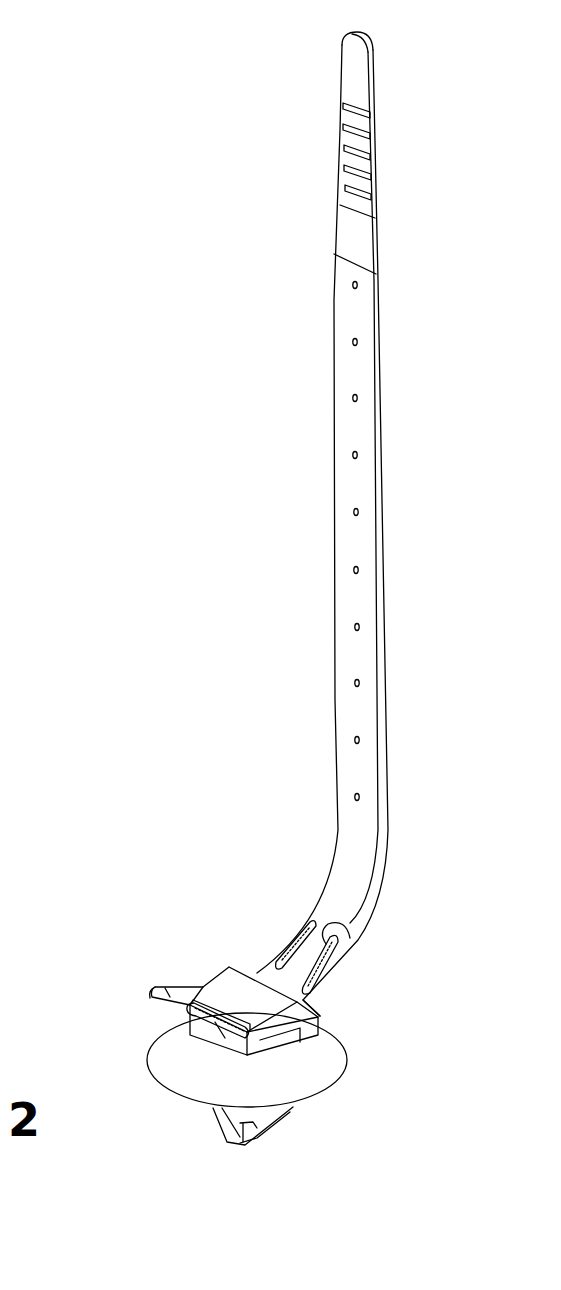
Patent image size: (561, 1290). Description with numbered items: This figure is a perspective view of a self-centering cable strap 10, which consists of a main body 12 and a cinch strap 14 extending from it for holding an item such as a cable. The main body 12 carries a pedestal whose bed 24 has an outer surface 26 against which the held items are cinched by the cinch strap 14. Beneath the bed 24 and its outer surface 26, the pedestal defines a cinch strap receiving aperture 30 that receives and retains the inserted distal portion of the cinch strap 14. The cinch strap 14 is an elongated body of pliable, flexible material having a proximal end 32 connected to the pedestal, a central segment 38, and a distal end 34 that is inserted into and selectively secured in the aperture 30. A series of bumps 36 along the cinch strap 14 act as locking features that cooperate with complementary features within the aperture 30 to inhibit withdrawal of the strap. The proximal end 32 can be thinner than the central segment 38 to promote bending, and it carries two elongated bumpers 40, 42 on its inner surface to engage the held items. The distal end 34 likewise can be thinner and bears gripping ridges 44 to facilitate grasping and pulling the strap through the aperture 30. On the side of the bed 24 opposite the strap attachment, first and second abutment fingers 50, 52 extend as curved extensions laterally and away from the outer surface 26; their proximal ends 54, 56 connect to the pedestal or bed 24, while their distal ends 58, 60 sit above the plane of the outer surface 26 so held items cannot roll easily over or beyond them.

The self-centering cable strap 10 is at (258, 290).
The main body 12 is at (136, 970).
The cinch strap 14 is at (418, 801).
The bed 24 is at (187, 1028).
The outer surface 26 is at (246, 1010).
The cinch strap receiving aperture 30 is at (200, 1062).
The proximal end 32 is at (330, 978).
The distal end 34 is at (345, 67).
The bumps 36 is at (352, 344).
The central segment 38 is at (383, 616).
The elongated bumper 40 is at (291, 927).
The elongated bumper 42 is at (345, 927).
The gripping ridges 44 is at (340, 131).
The first abutment finger 50 is at (202, 954).
The second abutment finger 52 is at (330, 1013).
The abutment finger proximal end 54 is at (196, 990).
The abutment finger proximal end 56 is at (318, 1050).
The abutment finger distal end 58 is at (150, 1000).
The abutment finger distal end 60 is at (222, 1068).